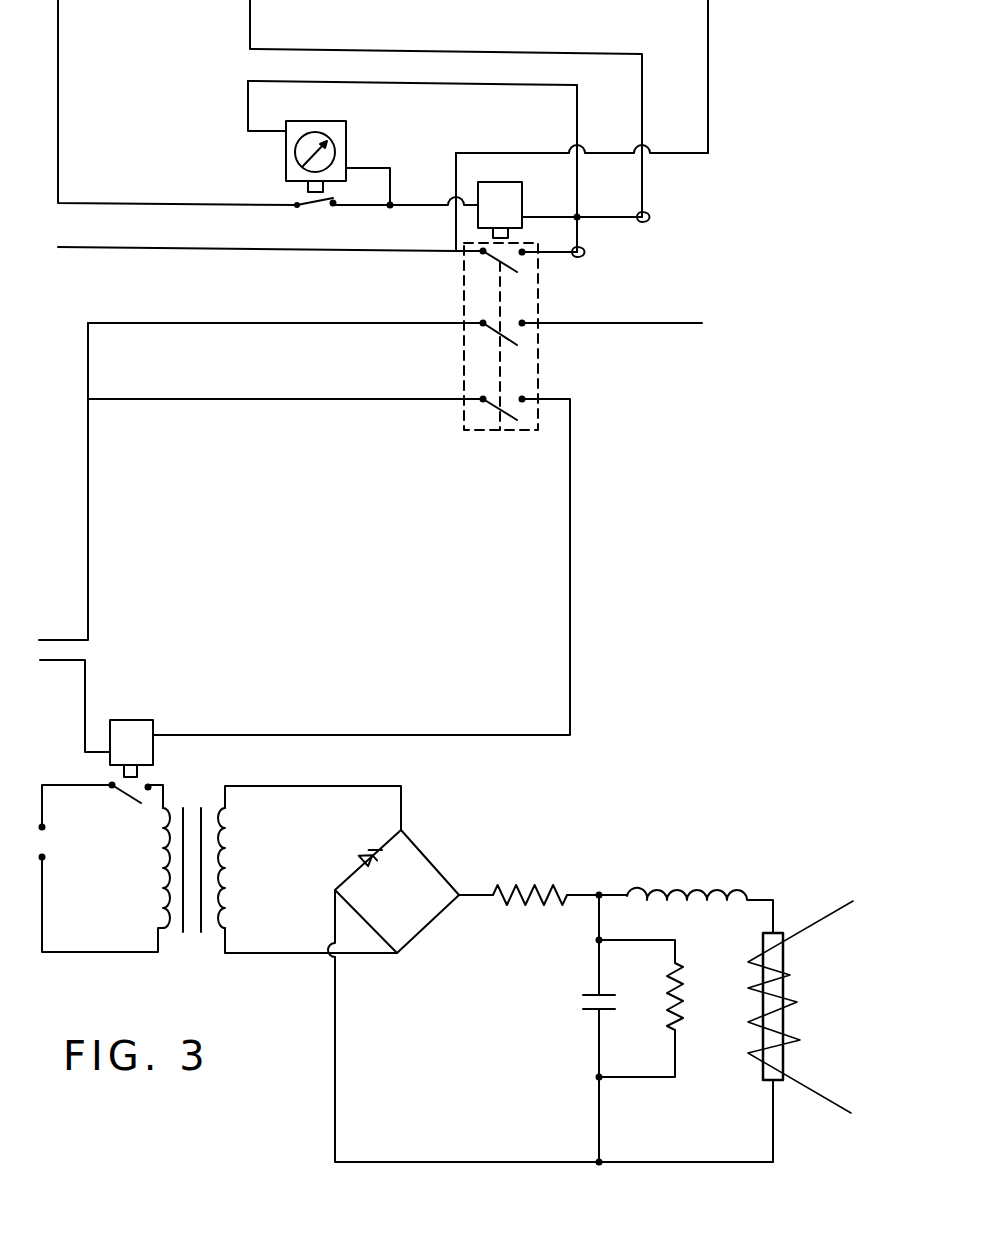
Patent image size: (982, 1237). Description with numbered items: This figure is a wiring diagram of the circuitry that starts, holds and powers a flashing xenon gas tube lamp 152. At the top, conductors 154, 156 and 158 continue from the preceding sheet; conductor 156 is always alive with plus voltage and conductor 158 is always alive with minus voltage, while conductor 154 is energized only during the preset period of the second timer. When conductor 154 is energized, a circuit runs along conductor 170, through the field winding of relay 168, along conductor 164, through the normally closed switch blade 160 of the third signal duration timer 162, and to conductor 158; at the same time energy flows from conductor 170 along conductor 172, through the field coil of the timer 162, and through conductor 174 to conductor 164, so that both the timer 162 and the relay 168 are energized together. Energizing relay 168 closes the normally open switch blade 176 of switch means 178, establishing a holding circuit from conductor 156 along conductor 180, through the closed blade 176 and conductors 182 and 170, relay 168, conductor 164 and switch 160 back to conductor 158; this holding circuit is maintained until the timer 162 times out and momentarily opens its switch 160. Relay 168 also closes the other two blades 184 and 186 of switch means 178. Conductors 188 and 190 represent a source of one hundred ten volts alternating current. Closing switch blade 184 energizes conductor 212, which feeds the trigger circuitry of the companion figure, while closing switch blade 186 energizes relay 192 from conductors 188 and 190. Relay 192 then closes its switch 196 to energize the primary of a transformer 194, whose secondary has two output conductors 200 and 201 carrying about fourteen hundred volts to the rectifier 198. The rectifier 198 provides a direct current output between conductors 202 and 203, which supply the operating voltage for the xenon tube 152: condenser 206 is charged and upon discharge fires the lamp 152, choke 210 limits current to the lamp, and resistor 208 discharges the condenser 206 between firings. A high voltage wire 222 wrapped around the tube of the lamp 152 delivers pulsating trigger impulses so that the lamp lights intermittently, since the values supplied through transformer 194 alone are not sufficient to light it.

The xenon lamp 152 is at (785, 988).
The conductor 154 is at (250, 22).
The conductor 156 is at (708, 35).
The conductor 158 is at (58, 60).
The switch blade 160 is at (306, 208).
The third signal duration timer 162 is at (340, 124).
The conductor 164 is at (438, 191).
The relay 168 is at (496, 192).
The conductor 170 is at (535, 204).
The conductor 172 is at (577, 129).
The conductor 174 is at (358, 171).
The switch blade 176 is at (498, 263).
The switch means 178 is at (528, 297).
The conductor 180 is at (458, 157).
The conductor 182 is at (572, 251).
The switch blade 184 is at (490, 332).
The switch blade 186 is at (490, 409).
The source conductor 188 is at (66, 640).
The source conductor 190 is at (65, 660).
The relay 192 is at (150, 748).
The transformer 194 is at (188, 940).
The switch 196 is at (125, 795).
The rectifier 198 is at (397, 891).
The output conductor 200 is at (362, 788).
The output conductor 201 is at (317, 950).
The conductor 202 is at (340, 983).
The conductor 203 is at (484, 895).
The condenser 206 is at (590, 993).
The resistor 208 is at (683, 974).
The choke 210 is at (695, 896).
The conductor 212 is at (632, 323).
The high voltage wire 222 is at (800, 935).